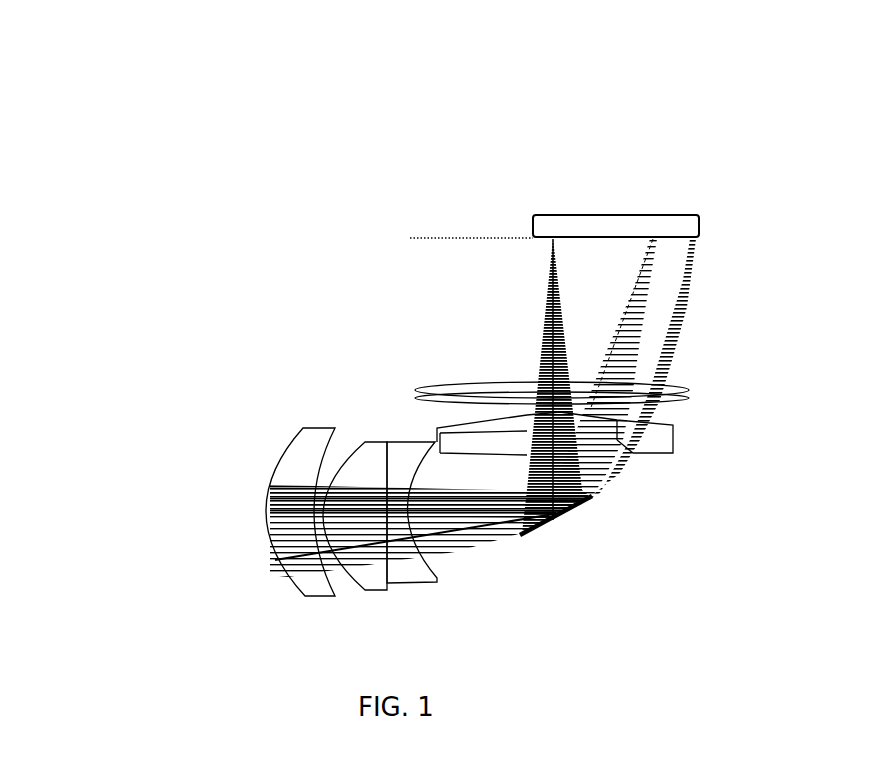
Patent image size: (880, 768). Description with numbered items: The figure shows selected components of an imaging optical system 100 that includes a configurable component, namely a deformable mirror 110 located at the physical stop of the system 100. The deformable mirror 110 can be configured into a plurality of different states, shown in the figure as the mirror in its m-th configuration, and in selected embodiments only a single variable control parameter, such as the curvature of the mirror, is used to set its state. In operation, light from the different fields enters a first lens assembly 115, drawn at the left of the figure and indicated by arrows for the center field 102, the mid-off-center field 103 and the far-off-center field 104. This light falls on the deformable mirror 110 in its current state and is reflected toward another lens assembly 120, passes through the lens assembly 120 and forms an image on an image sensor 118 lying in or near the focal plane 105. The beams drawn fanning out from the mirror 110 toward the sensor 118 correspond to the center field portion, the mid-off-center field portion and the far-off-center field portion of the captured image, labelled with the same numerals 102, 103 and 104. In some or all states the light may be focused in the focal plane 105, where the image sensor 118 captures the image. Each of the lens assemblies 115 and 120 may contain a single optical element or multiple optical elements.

The imaging optical system 100 is at (353, 33).
The center field 102 is at (202, 523).
The mid-off-center field 103 is at (203, 558).
The far-off-center field 104 is at (215, 592).
The focal plane 105 is at (419, 234).
The deformable mirror 110 is at (584, 518).
The lens assembly 115 is at (350, 416).
The image sensor 118 is at (616, 226).
The lens assembly 120 is at (694, 413).